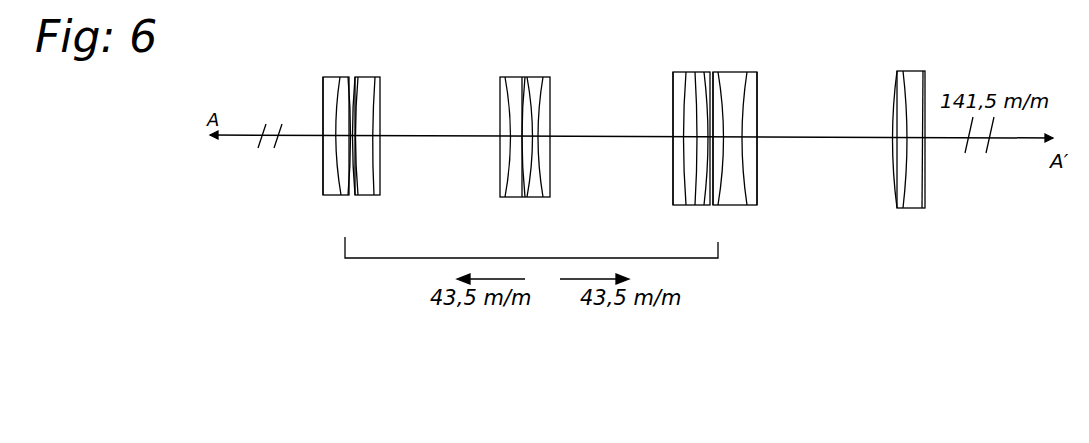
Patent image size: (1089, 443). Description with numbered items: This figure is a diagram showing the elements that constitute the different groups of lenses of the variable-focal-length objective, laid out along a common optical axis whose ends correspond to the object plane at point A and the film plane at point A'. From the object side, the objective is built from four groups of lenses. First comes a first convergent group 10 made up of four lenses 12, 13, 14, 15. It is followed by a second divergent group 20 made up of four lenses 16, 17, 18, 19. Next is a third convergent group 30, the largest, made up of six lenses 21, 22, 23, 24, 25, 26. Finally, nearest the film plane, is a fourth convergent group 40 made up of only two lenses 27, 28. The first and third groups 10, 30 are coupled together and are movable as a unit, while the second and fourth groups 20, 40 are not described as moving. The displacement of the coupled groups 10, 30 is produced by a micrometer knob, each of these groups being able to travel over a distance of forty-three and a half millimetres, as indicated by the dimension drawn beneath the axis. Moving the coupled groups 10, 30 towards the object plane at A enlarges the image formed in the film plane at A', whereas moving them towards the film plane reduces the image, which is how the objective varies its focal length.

The first convergent group 10 is at (387, 51).
The lens 12 is at (333, 190).
The lens 13 is at (344, 185).
The lens 14 is at (358, 182).
The lens 15 is at (371, 170).
The second divergent group 20 is at (557, 51).
The lens 16 is at (510, 181).
The lens 17 is at (518, 117).
The lens 18 is at (532, 190).
The lens 19 is at (545, 166).
The third convergent group 30 is at (758, 51).
The lens 21 is at (678, 179).
The lens 22 is at (692, 196).
The lens 23 is at (699, 196).
The lens 24 is at (718, 186).
The lens 25 is at (733, 183).
The lens 26 is at (751, 160).
The fourth convergent group 40 is at (933, 64).
The lens 27 is at (900, 186).
The lens 28 is at (915, 186).